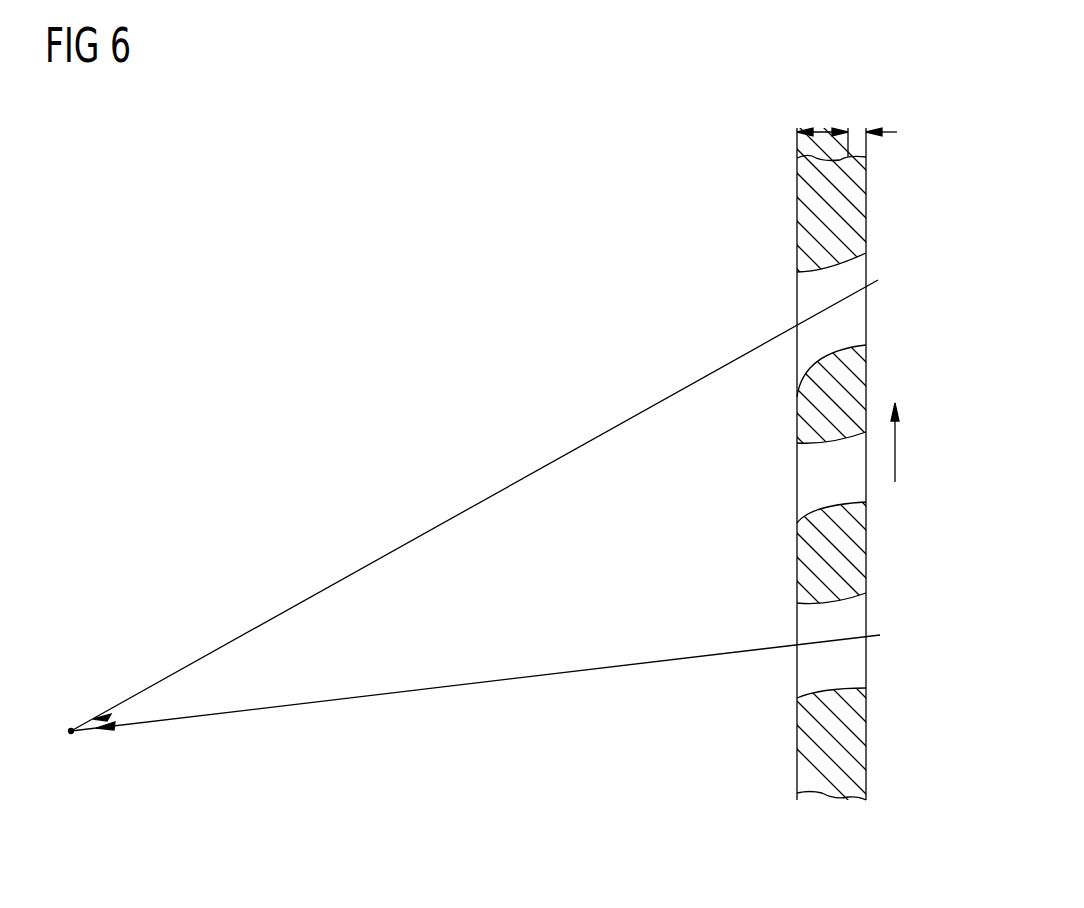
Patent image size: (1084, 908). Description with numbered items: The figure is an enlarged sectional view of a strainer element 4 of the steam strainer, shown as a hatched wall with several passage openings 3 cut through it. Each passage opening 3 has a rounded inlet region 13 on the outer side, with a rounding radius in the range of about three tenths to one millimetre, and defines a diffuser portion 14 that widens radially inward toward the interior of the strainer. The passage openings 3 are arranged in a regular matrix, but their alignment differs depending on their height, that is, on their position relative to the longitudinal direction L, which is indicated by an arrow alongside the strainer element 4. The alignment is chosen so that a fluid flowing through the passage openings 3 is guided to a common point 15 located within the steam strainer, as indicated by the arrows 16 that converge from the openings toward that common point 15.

The passage openings 3 is at (808, 298).
The strainer element 4 is at (799, 191).
The rounded inlet region 13 is at (858, 122).
The diffuser portion 14 is at (824, 122).
The common point 15 is at (71, 728).
The arrows 16 is at (402, 545).
The longitudinal direction L is at (895, 442).